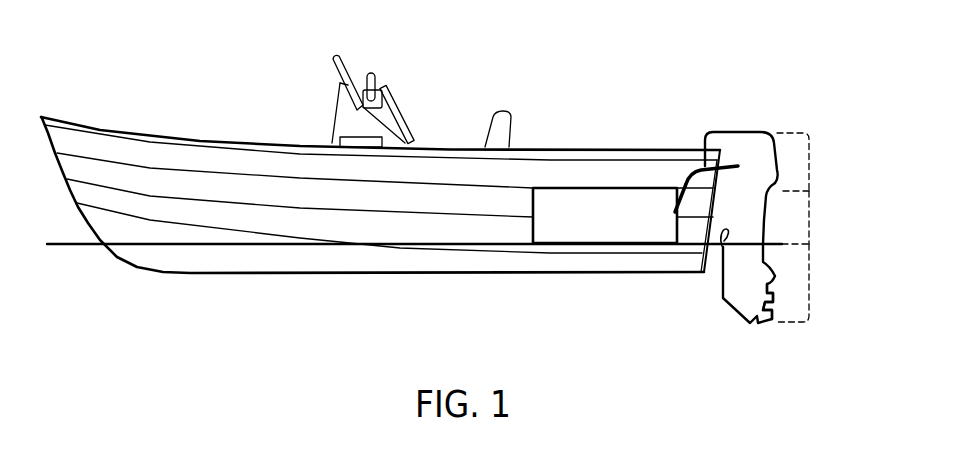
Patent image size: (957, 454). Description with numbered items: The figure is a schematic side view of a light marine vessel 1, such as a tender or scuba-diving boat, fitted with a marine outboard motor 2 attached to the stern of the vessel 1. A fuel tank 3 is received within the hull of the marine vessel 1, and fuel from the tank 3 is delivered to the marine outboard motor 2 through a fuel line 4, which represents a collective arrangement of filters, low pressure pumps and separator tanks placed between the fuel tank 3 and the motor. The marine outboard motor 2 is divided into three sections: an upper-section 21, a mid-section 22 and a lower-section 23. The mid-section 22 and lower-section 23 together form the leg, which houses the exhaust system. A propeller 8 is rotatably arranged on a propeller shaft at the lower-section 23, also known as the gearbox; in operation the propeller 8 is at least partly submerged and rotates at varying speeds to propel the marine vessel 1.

The marine vessel 1 is at (197, 104).
The marine outboard motor 2 is at (792, 222).
The fuel tank 3 is at (577, 223).
The fuel line 4 is at (693, 168).
The propeller 8 is at (765, 316).
The upper-section 21 is at (810, 163).
The mid-section 22 is at (810, 218).
The lower-section 23 is at (810, 283).